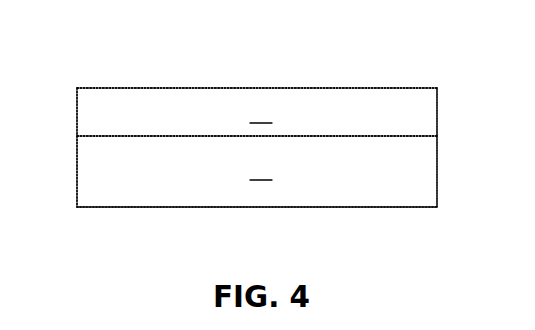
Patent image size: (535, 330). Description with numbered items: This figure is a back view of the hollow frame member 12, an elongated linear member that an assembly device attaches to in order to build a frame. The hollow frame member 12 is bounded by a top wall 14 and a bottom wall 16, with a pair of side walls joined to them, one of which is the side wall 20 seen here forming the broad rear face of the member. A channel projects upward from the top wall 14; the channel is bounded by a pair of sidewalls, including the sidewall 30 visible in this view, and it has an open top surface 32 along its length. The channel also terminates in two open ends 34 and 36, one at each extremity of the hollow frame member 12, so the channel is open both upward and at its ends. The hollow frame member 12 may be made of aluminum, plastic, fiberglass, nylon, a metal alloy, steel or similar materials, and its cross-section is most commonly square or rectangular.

The hollow frame member 12 is at (462, 70).
The top wall 14 is at (102, 136).
The bottom wall 16 is at (183, 209).
The side wall 20 is at (257, 158).
The sidewall of channel 30 is at (261, 112).
The open top surface 32 is at (146, 88).
The open end of channel 34 is at (77, 108).
The open end of channel 36 is at (437, 108).